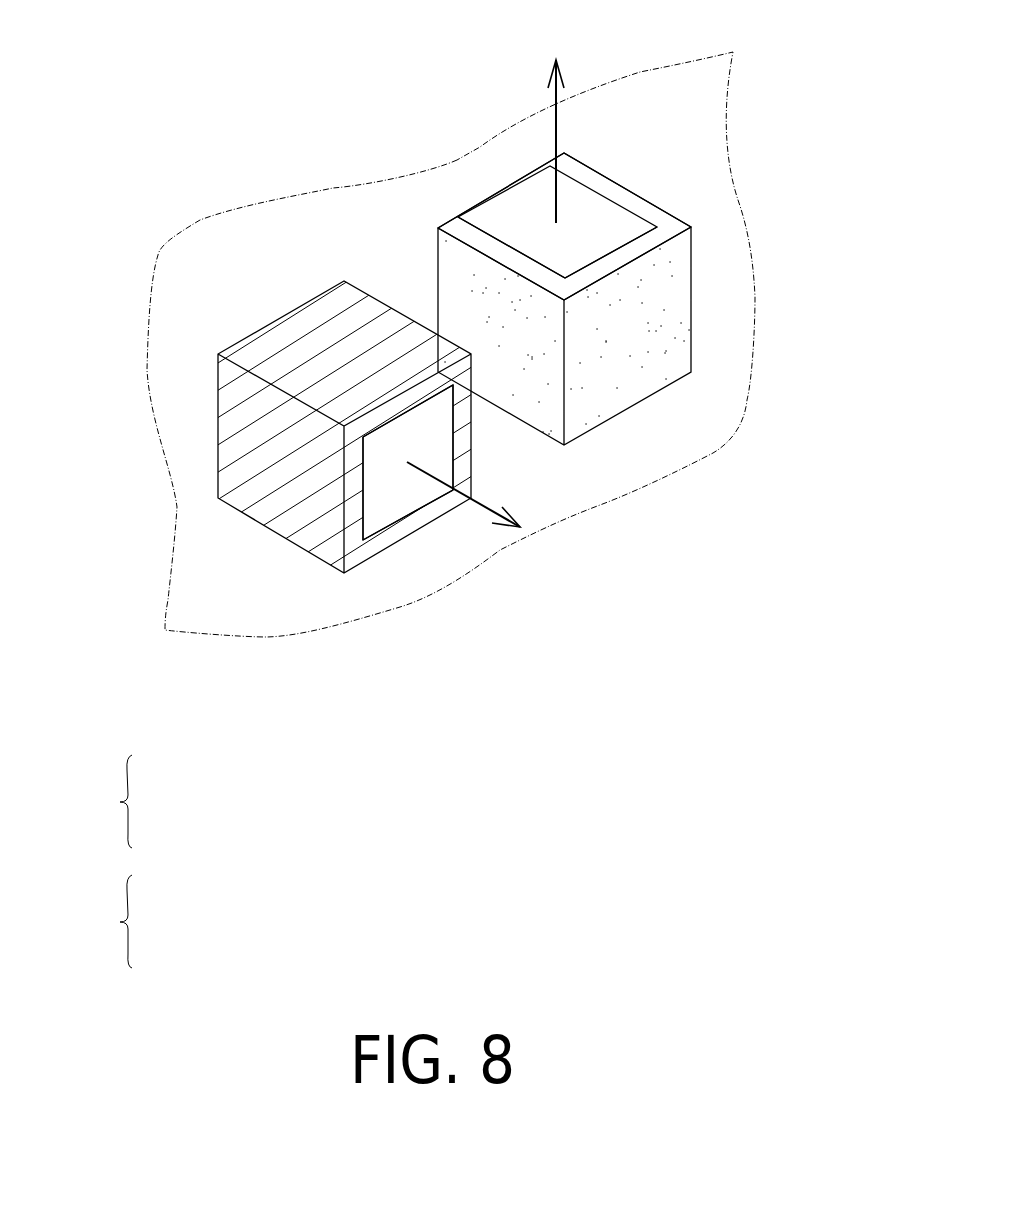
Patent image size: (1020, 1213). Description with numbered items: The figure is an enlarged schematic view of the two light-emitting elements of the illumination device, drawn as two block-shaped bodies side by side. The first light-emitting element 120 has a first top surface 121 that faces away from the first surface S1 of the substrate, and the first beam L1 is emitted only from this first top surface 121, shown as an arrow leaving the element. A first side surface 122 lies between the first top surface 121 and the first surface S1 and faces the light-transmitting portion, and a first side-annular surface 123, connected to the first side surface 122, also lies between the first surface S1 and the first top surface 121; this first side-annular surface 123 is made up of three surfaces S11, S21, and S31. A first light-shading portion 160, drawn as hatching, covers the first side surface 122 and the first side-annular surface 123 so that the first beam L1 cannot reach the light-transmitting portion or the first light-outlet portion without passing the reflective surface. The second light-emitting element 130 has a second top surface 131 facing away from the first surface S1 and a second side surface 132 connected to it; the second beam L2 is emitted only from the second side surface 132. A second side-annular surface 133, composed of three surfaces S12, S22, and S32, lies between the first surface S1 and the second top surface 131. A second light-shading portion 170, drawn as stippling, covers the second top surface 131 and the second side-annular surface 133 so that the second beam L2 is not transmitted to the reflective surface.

The first light-emitting element 120 is at (350, 473).
The first top surface 121 is at (402, 487).
The first side surface 122 is at (402, 418).
The first side-annular surface 123 is at (101, 801).
The second light-emitting element 130 is at (621, 227).
The second top surface 131 is at (623, 247).
The second side surface 132 is at (585, 206).
The second side-annular surface 133 is at (101, 921).
The first light-shading portion 160 is at (283, 497).
The second light-shading portion 170 is at (668, 315).
The first surface S1 is at (695, 149).
The surface of the first light-emitting element S11 is at (365, 502).
The surface of the first light-emitting element S21 is at (430, 489).
The surface of the first light-emitting element S31 is at (451, 436).
The surface of the second light-emitting element S12 is at (541, 263).
The surface of the second light-emitting element S22 is at (152, 925).
The surface of the second light-emitting element S32 is at (600, 256).
The first beam L1 is at (475, 502).
The second beam L2 is at (552, 98).